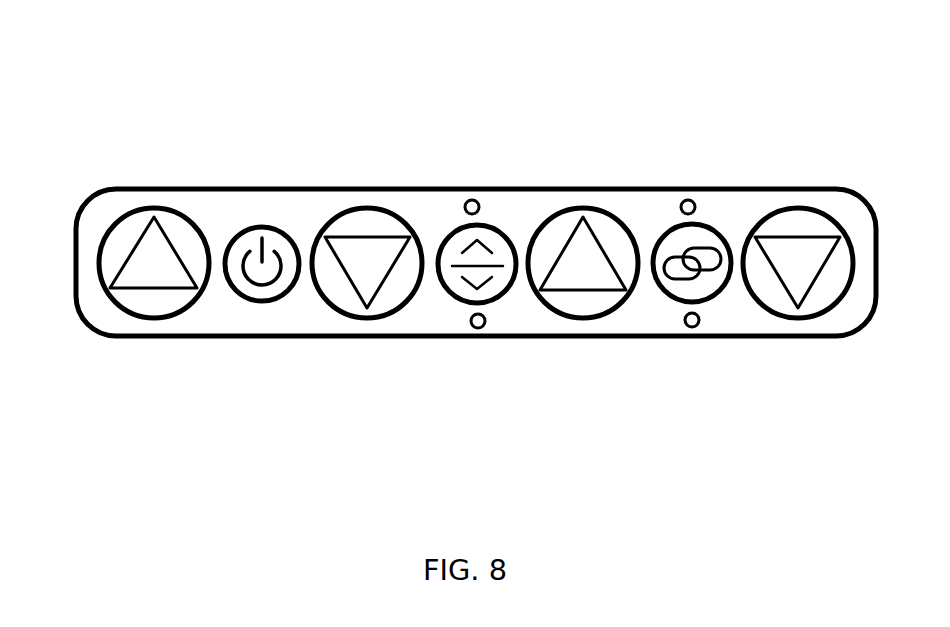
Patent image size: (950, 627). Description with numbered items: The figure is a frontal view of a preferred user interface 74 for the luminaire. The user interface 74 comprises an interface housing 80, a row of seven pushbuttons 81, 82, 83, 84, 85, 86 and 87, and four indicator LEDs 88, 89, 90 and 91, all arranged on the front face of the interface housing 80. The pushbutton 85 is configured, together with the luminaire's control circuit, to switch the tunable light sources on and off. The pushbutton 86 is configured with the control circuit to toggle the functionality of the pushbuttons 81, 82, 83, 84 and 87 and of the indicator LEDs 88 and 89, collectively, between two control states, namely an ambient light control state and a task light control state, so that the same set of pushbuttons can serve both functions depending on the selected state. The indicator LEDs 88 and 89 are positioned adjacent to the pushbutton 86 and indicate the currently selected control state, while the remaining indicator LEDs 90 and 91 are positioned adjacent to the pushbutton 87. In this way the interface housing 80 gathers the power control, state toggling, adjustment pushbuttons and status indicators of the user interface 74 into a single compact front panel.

The user interface 74 is at (852, 102).
The interface housing 80 is at (117, 188).
The pushbutton 81 is at (153, 318).
The pushbutton 82 is at (367, 318).
The pushbutton 83 is at (583, 318).
The pushbutton 84 is at (798, 318).
The pushbutton 85 is at (262, 227).
The pushbutton 86 is at (488, 226).
The pushbutton 87 is at (705, 226).
The indicator LED 88 is at (472, 200).
The indicator LED 89 is at (478, 328).
The indicator LED 90 is at (688, 200).
The indicator LED 91 is at (692, 327).